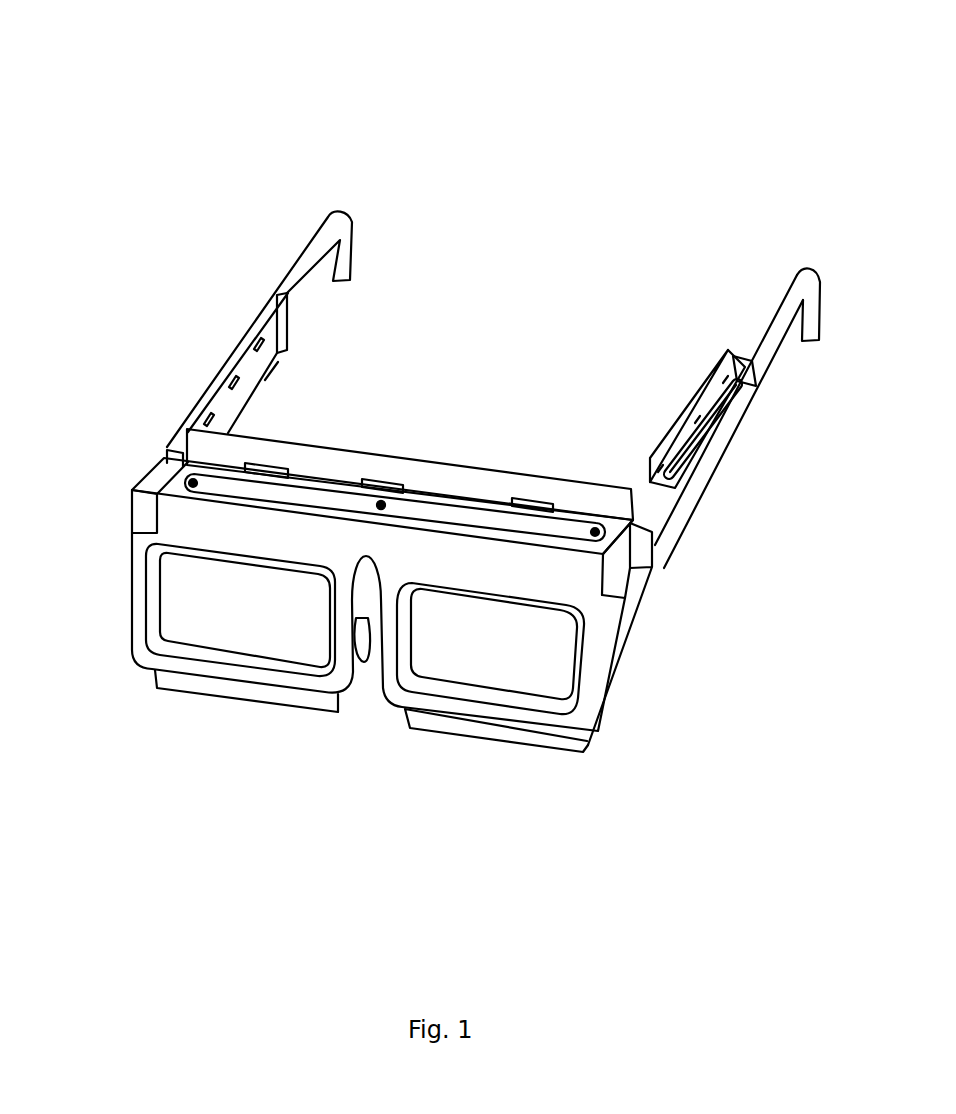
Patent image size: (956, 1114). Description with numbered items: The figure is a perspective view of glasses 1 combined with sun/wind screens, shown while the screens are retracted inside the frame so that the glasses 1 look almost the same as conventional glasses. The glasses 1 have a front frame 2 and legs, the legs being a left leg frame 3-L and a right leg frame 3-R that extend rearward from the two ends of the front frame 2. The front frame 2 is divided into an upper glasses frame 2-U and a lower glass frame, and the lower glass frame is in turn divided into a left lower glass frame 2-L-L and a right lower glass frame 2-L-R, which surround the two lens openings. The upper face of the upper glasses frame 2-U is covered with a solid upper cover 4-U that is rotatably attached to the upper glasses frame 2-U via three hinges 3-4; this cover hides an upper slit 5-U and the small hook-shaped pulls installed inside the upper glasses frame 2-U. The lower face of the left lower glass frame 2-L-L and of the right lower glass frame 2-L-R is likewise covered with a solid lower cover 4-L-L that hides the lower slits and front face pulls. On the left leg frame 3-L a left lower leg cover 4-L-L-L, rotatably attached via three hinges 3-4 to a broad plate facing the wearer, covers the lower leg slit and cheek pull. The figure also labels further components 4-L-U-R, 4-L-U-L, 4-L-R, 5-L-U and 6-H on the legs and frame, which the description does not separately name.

The glasses 1 is at (493, 210).
The front frame 2 is at (147, 473).
The upper glasses frame 2-U is at (347, 547).
The right lower glass frame 2-L-R is at (282, 680).
The left lower glass frame 2-L-L is at (417, 700).
The right leg frame 3-R is at (213, 363).
The left leg frame 3-L is at (742, 342).
The hinges 3-4 is at (527, 500).
The solid upper cover 4-U is at (458, 487).
The right temple upper rail 4-L-U-R is at (257, 348).
The left temple upper rail 4-L-U-L is at (703, 352).
The right lower rail 4-L-R is at (175, 680).
The solid lower cover 4-L-L is at (550, 737).
The left lower leg cover 4-L-L-L is at (700, 495).
The upper slit 5-U is at (168, 457).
The left temple upper slot 5-L-U is at (717, 412).
The hole 6-H is at (381, 505).